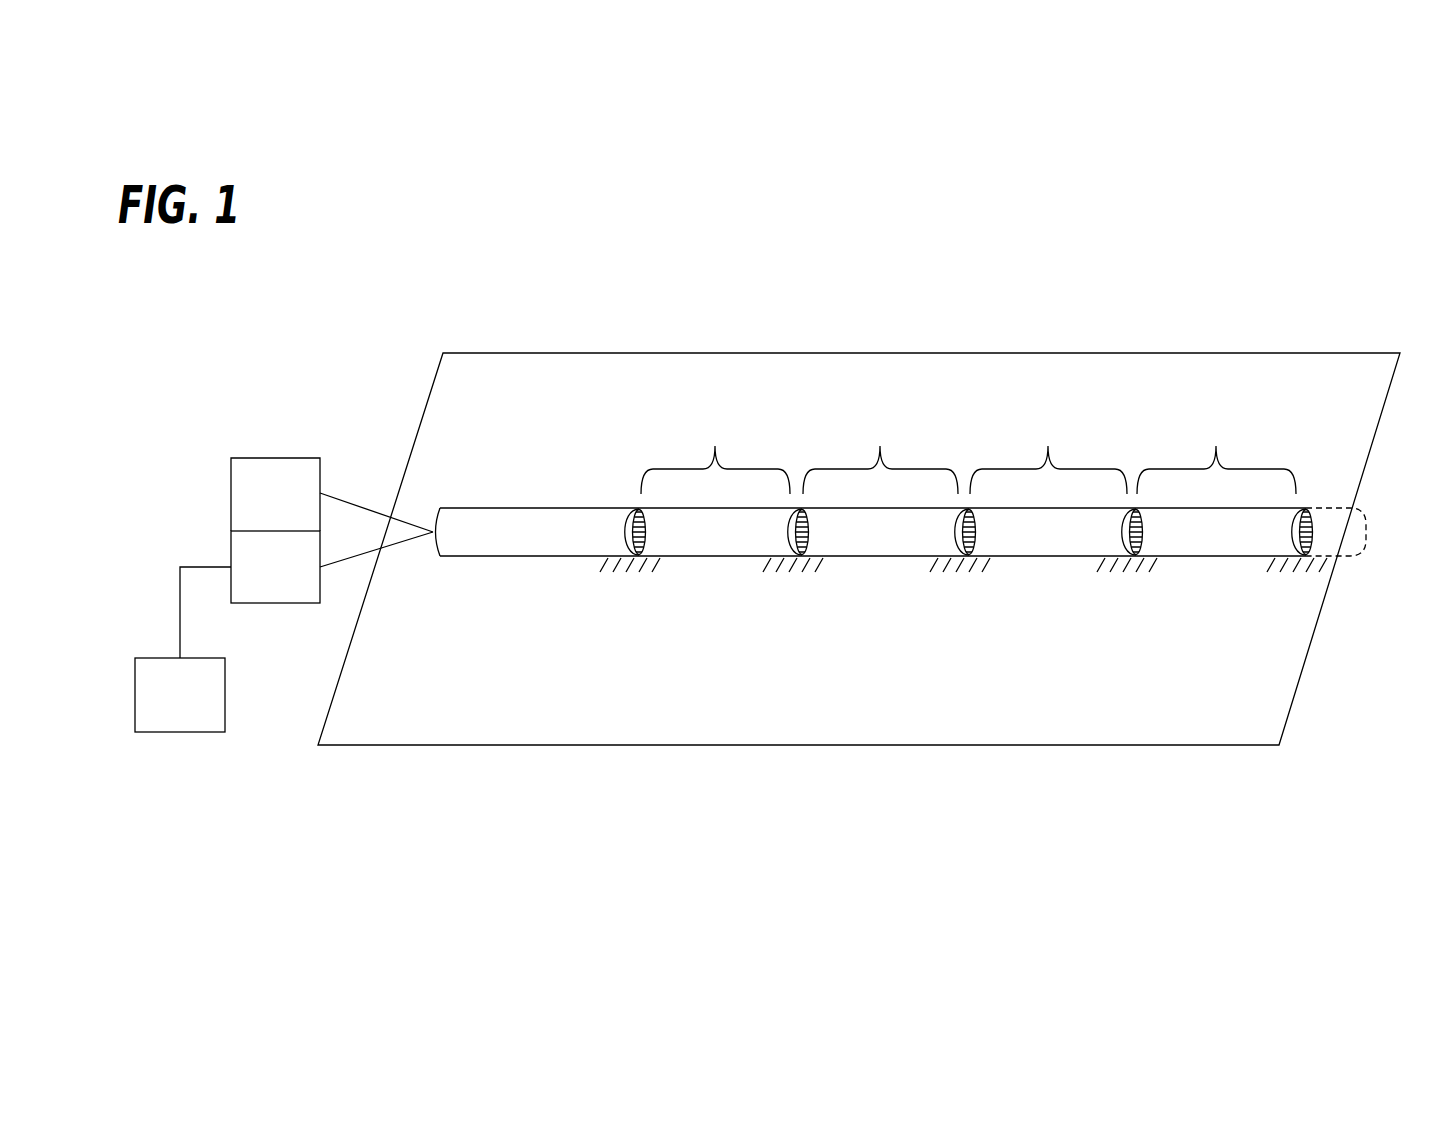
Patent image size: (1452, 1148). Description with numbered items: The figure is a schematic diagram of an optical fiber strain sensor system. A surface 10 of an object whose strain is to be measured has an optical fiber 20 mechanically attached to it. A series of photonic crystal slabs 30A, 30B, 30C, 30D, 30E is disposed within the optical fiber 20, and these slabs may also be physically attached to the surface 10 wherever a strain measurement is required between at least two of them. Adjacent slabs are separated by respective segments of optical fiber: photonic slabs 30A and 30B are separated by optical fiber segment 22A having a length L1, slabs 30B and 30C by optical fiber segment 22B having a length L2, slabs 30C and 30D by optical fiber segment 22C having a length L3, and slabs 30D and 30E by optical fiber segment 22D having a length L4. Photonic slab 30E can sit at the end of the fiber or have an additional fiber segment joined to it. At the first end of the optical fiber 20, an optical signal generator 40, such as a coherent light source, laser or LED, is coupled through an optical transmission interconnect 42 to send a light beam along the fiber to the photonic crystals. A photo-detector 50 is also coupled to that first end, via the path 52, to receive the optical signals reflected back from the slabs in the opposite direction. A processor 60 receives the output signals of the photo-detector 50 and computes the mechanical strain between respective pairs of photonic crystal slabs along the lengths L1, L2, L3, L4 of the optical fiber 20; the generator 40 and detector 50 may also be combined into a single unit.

The surface 10 is at (487, 393).
The optical fiber 20 is at (512, 523).
The optical fiber segment 22A is at (713, 527).
The optical fiber segment 22B is at (878, 527).
The optical fiber segment 22C is at (1045, 527).
The optical fiber segment 22D is at (1204, 527).
The photonic crystal slab 30A is at (628, 548).
The photonic crystal slab 30B is at (791, 548).
The photonic crystal slab 30C is at (958, 548).
The photonic crystal slab 30D is at (1125, 548).
The photonic crystal slab 30E is at (1295, 548).
The optical signal generator 40 is at (275, 494).
The optical transmission interconnect 42 is at (359, 506).
The photo-detector 50 is at (275, 567).
The reflected light path 52 is at (359, 556).
The processor 60 is at (183, 649).
The length L1 is at (715, 451).
The length L2 is at (880, 451).
The length L3 is at (1048, 451).
The length L4 is at (1216, 451).